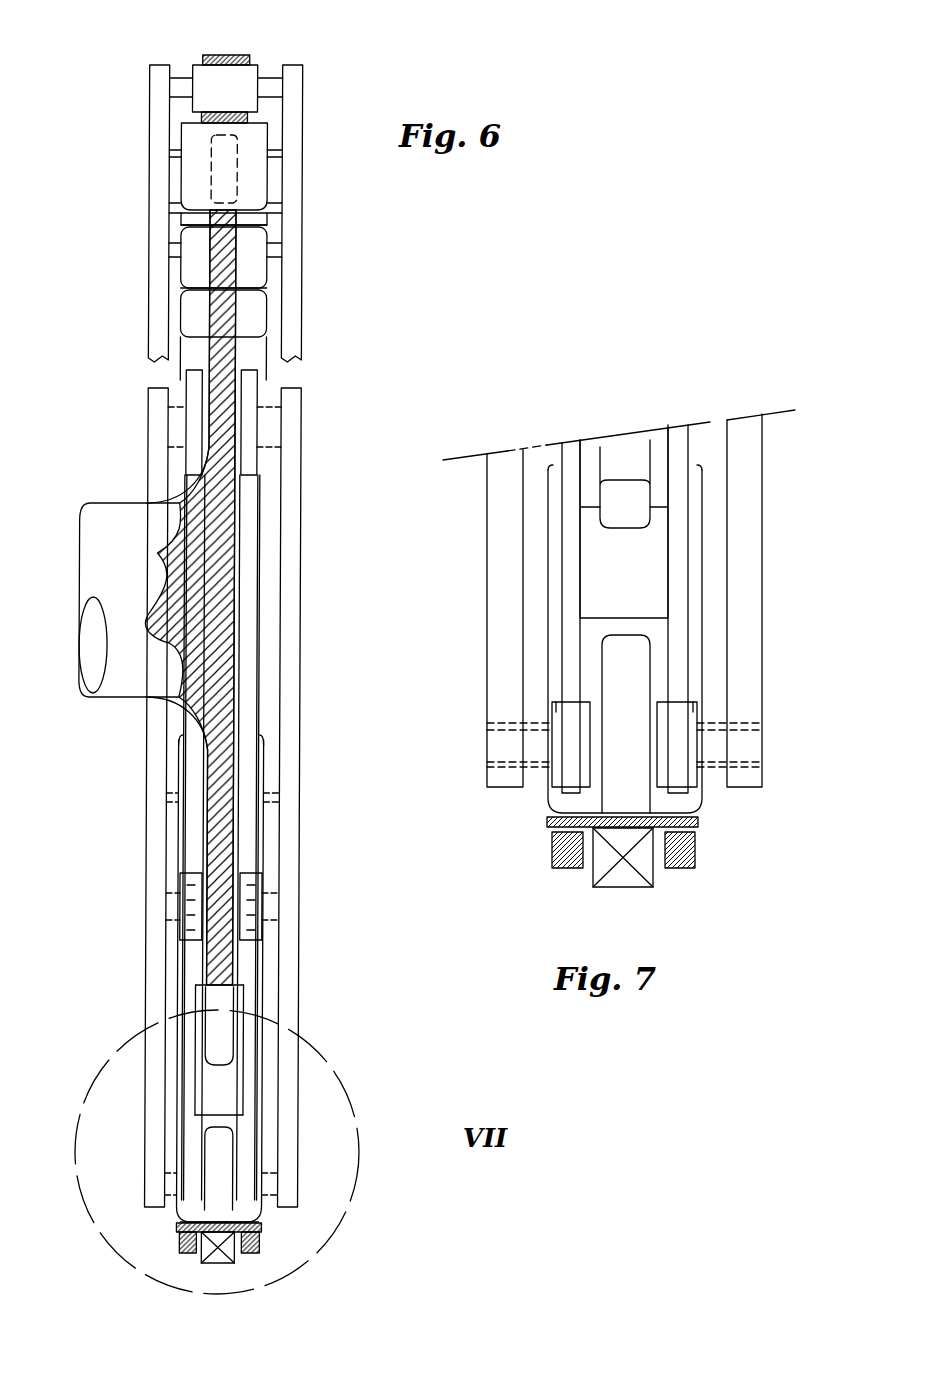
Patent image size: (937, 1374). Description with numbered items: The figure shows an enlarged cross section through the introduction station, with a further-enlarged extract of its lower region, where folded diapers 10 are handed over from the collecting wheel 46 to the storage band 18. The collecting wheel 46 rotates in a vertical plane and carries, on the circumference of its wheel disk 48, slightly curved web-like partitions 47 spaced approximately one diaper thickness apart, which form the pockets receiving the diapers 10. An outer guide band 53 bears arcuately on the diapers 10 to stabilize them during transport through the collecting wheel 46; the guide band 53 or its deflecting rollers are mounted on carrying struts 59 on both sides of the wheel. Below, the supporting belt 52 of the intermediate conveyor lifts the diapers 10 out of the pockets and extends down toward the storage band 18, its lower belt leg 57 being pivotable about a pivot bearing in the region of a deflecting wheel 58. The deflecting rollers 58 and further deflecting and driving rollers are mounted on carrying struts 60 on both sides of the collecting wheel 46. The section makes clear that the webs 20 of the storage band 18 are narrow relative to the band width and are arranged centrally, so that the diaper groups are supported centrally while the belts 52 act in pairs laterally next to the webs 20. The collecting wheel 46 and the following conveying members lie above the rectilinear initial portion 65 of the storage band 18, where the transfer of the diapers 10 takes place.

In FIG. 6, the diaper 10 is at (258, 138).
In FIG. 7, the diaper 10 is at (623, 583).
In FIG. 6, the storage band 18 is at (300, 1233).
In FIG. 7, the storage band 18 is at (692, 905).
In FIG. 6, the web 20 is at (220, 1137).
In FIG. 7, the web 20 is at (625, 685).
In FIG. 6, the collecting wheel 46 is at (341, 418).
In FIG. 7, the collecting wheel 46 is at (673, 388).
In FIG. 6, the partition 47 is at (218, 178).
In FIG. 7, the partition 47 is at (628, 450).
In FIG. 6, the wheel disk 48 is at (220, 318).
In FIG. 6, the supporting belt 52 is at (185, 755).
In FIG. 7, the supporting belt 52 is at (570, 455).
In FIG. 6, the guide band 53 is at (228, 110).
In FIG. 6, the lower belt leg 57 is at (250, 1095).
In FIG. 7, the lower belt leg 57 is at (624, 707).
In FIG. 6, the deflecting roller 58 is at (245, 895).
In FIG. 6, the carrying strut 59 is at (290, 233).
In FIG. 6, the carrying strut 60 is at (290, 760).
In FIG. 7, the carrying strut 60 is at (740, 470).
In FIG. 6, the initial portion 65 is at (148, 1244).